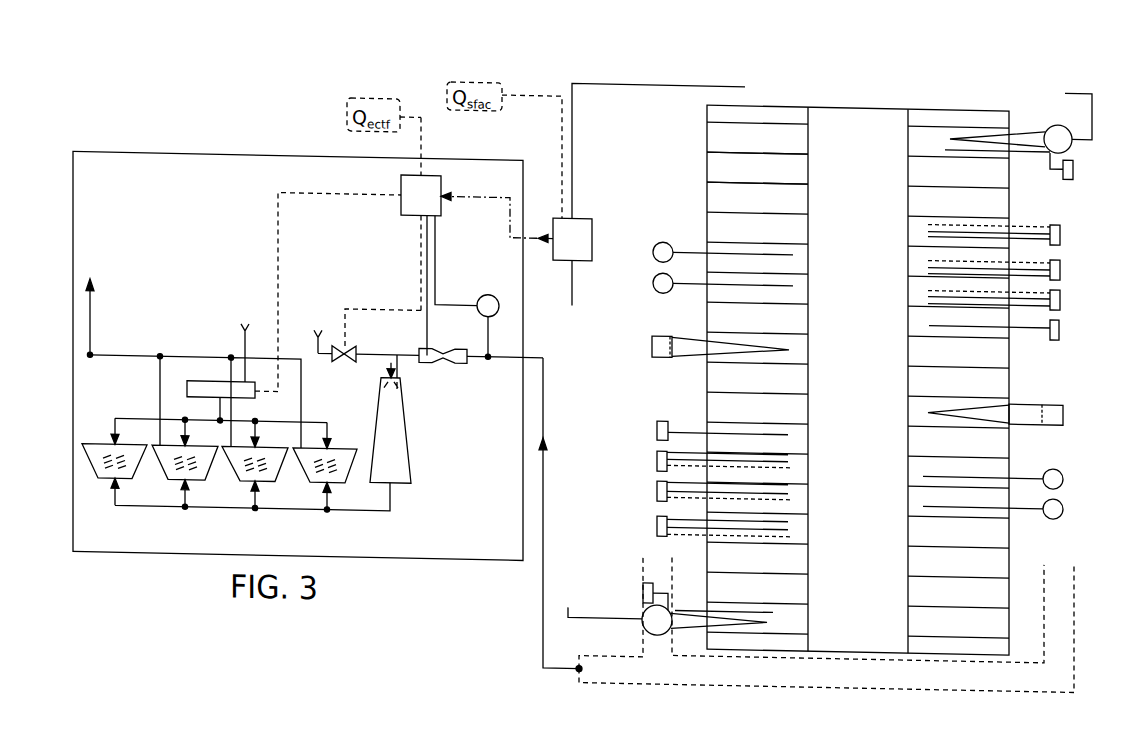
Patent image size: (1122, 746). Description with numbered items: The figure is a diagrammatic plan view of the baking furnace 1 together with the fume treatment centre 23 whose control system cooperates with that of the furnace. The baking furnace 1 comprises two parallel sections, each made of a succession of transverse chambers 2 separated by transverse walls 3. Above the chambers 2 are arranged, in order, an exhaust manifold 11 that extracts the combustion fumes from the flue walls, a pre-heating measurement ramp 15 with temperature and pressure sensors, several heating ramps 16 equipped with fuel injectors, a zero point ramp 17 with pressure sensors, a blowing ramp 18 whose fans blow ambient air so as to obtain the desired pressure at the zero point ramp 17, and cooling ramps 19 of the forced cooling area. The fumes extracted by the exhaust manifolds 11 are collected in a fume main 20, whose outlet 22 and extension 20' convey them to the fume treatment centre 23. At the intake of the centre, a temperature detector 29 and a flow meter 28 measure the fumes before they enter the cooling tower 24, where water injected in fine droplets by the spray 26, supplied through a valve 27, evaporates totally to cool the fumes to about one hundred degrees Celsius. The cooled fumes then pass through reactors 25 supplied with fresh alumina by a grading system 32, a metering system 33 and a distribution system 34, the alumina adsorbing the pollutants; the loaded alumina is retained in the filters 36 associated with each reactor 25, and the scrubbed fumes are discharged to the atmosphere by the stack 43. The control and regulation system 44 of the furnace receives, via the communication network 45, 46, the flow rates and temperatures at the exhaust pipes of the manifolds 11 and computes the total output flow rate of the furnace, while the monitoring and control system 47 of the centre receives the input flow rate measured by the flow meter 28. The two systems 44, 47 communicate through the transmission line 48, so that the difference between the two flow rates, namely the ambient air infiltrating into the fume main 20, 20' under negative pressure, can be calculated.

The baking furnace 1 is at (612, 57).
The transverse chamber 2 is at (1000, 186).
The transverse wall 3 is at (782, 139).
The exhaust manifold 11 is at (650, 604).
The pre-heating measurement ramp 15 is at (643, 579).
The heating ramp 16 is at (657, 512).
The zero point ramp 17 is at (658, 417).
The blowing ramp 18 is at (655, 332).
The cooling ramp 19 is at (655, 264).
The fume main 20 is at (849, 617).
The extension of the fume main 20' is at (538, 513).
The outlet of the fume main 22 is at (575, 662).
The fume treatment centre 23 is at (113, 148).
The cooling tower 24 is at (407, 421).
The reactor 25 is at (150, 495).
The spray 26 is at (384, 370).
The valve 27 is at (341, 357).
The flow meter 28 is at (444, 341).
The temperature detector 29 is at (497, 287).
The grading system 32 is at (282, 295).
The metering system 33 is at (328, 293).
The distribution system 34 is at (306, 414).
The filter 36 is at (289, 495).
The stack 43 is at (93, 310).
The control and regulation system of the BF 44 is at (583, 206).
The communication network 45 is at (707, 71).
The communication network 46 is at (575, 281).
The monitoring and control system of the FTC 47 is at (432, 168).
The transmission line 48 is at (491, 189).